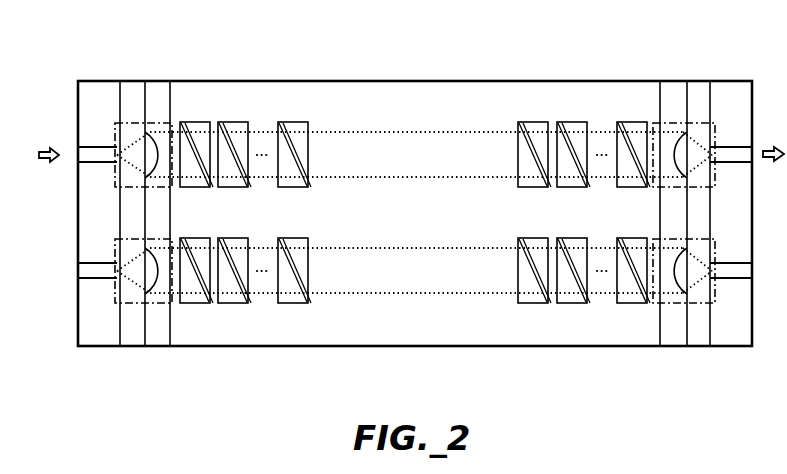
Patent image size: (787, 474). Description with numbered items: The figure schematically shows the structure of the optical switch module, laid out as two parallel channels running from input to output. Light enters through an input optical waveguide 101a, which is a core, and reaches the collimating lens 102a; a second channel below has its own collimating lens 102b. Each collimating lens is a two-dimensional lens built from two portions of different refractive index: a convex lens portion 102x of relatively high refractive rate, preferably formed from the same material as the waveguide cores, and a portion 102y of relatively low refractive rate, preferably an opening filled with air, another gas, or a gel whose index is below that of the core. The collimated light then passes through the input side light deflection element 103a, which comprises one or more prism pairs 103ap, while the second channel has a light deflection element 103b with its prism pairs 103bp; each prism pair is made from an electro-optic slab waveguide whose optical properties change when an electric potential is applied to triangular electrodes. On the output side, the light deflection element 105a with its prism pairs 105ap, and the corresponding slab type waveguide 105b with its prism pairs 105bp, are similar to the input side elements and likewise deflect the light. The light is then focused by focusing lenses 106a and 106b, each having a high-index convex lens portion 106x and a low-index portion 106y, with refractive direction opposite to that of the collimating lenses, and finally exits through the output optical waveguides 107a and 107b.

The optical waveguide 101a is at (97, 163).
The collimating lens 102a is at (113, 130).
The collimating lens 102b is at (113, 299).
The convex lens portion 102x is at (133, 93).
The low refractive rate portion 102y is at (157, 93).
The light deflection element 103a is at (253, 142).
The prism pair 103ap is at (202, 122).
The light deflection element 103b is at (288, 311).
The prism pair 103bp is at (250, 289).
The light deflection element 105a is at (564, 142).
The prism pair 105ap is at (632, 122).
The slab type waveguide 105b is at (555, 310).
The prism pair 105bp is at (648, 310).
The focusing lens 106a is at (670, 122).
The focusing lens 106b is at (671, 302).
The convex lens portion 106x is at (695, 88).
The low refractive rate portion 106y is at (675, 90).
The optical waveguide 107a is at (727, 146).
The optical waveguide 107b is at (738, 280).